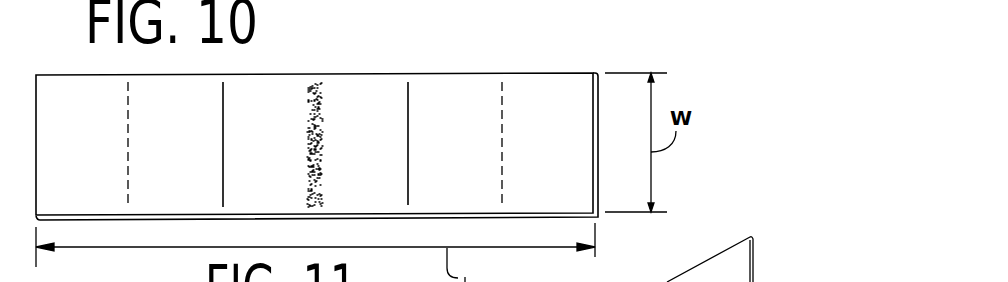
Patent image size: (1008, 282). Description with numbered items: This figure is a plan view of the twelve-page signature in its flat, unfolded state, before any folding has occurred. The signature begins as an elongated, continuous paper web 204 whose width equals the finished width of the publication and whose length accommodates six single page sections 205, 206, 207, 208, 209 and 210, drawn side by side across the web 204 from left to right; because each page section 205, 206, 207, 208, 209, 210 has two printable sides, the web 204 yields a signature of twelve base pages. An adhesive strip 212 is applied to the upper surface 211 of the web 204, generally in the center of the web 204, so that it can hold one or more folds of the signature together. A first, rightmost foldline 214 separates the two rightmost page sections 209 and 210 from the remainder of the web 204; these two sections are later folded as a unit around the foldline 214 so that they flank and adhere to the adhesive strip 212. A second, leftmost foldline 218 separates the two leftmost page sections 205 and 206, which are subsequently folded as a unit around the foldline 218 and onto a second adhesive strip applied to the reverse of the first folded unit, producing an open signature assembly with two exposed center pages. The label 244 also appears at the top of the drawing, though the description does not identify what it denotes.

The continuous paper web 204 is at (314, 75).
The page section 205 is at (107, 135).
The page section 206 is at (199, 135).
The page section 207 is at (291, 134).
The page section 208 is at (387, 133).
The page section 209 is at (478, 133).
The page section 210 is at (569, 133).
The upper surface 211 is at (518, 80).
The adhesive strip 212 is at (318, 99).
The first foldline 214 is at (408, 100).
The second foldline 218 is at (223, 182).
The strip 244 is at (420, 6).